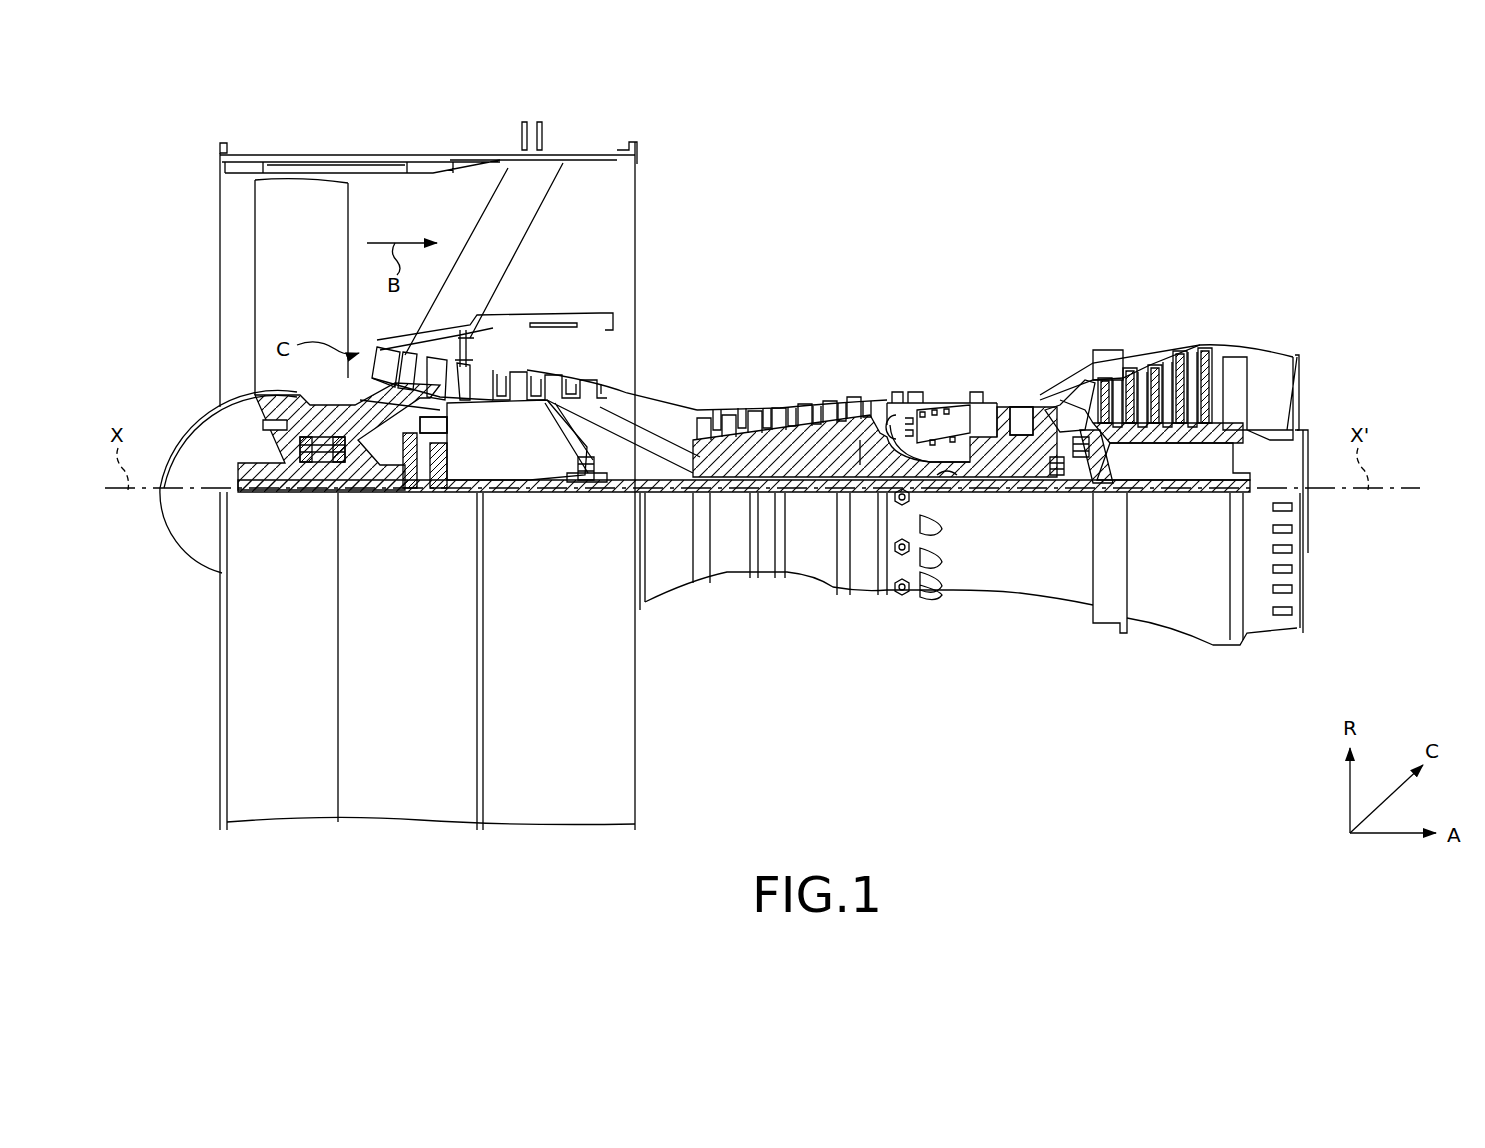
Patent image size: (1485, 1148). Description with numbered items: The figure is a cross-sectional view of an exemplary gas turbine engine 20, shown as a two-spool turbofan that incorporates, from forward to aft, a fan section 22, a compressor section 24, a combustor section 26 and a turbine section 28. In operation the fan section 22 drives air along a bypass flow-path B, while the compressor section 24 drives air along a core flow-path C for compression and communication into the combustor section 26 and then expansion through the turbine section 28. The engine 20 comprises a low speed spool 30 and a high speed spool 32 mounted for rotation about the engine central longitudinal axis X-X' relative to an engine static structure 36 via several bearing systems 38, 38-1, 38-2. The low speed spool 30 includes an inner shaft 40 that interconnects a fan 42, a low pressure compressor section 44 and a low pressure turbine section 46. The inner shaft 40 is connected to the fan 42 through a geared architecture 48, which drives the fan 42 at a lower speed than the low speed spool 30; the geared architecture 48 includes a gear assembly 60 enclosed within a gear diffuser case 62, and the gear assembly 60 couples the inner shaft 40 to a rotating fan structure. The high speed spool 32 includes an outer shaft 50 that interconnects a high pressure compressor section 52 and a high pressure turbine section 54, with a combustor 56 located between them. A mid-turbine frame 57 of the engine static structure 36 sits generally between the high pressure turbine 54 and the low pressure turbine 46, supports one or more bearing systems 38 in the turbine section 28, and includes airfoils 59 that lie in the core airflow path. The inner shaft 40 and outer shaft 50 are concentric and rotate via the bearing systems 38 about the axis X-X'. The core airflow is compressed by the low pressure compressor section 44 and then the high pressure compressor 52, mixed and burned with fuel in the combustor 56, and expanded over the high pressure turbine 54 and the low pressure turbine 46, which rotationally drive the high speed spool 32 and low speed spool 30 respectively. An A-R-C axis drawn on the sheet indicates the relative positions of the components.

The gas turbine engine 20 is at (1007, 195).
The fan section 22 is at (478, 128).
The compressor section 24 is at (897, 272).
The combustor section 26 is at (1003, 272).
The turbine section 28 is at (1238, 272).
The low speed spool 30 is at (819, 525).
The high speed spool 32 is at (861, 453).
The engine static structure 36 is at (207, 833).
The bearing system 38 is at (1066, 484).
The bearing system 38-1 is at (311, 464).
The bearing system 38-2 is at (585, 482).
The inner shaft 40 is at (668, 497).
The fan 42 is at (301, 287).
The low pressure compressor section 44 is at (563, 383).
The low pressure turbine section 46 is at (1165, 375).
The geared architecture 48 is at (443, 513).
The outer shaft 50 is at (940, 465).
The high pressure compressor section 52 is at (813, 415).
The high pressure turbine section 54 is at (1020, 405).
The combustor 56 is at (952, 425).
The mid-turbine frame 57 is at (1070, 390).
The airfoils 59 is at (1085, 408).
The gear assembly 60 is at (448, 473).
The gear diffuser case 62 is at (441, 429).